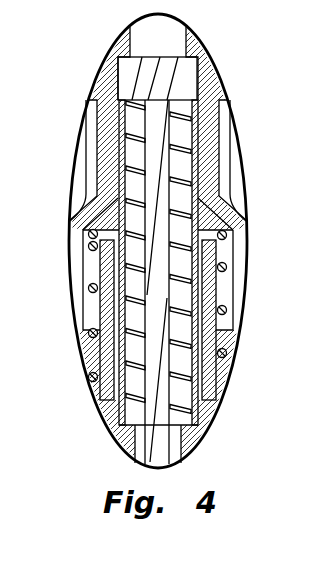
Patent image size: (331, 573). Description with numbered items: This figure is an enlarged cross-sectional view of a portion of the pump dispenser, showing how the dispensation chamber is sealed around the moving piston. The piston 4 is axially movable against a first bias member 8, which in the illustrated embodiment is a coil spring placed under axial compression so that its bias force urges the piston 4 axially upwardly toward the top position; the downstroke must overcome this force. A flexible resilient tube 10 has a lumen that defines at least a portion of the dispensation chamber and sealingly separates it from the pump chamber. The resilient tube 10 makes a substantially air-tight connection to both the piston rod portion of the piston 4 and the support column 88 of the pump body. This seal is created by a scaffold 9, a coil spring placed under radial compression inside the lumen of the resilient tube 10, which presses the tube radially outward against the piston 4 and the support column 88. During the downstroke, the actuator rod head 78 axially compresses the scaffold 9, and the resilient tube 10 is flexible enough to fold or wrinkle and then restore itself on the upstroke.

The piston 4 is at (208, 78).
The actuator rod head 78 is at (143, 80).
The first bias member 8 is at (216, 263).
The scaffold 9 is at (205, 338).
The resilient tube 10 is at (203, 397).
The support column 88 is at (112, 405).